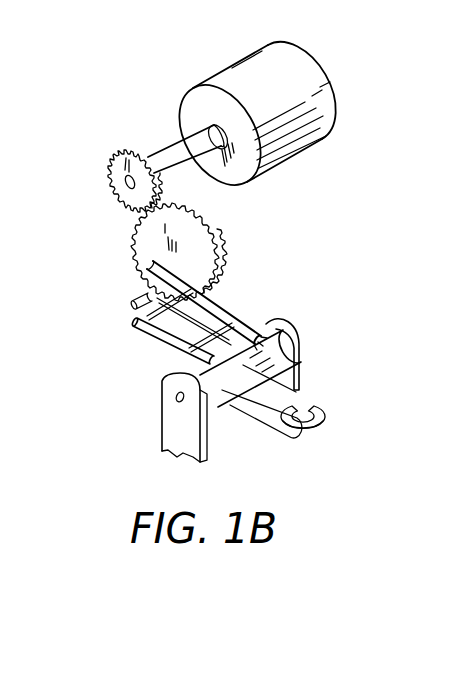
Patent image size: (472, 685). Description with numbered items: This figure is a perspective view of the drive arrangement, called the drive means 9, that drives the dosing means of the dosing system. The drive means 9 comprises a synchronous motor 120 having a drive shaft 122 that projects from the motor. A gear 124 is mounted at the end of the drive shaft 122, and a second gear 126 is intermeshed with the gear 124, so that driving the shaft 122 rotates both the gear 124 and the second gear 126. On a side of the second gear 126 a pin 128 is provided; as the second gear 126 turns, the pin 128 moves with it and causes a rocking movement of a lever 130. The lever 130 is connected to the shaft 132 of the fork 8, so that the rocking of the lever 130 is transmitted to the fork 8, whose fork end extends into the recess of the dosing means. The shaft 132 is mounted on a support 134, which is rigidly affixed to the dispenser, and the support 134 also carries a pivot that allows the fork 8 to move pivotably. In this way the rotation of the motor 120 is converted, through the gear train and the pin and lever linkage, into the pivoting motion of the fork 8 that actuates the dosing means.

The fork 8 is at (321, 406).
The drive means 9 is at (166, 88).
The synchronous motor 120 is at (313, 82).
The drive shaft 122 is at (182, 138).
The gear 124 is at (108, 177).
The second gear 126 is at (183, 252).
The pin 128 is at (151, 327).
The lever 130 is at (223, 300).
The shaft 132 is at (277, 350).
The support 134 is at (175, 416).